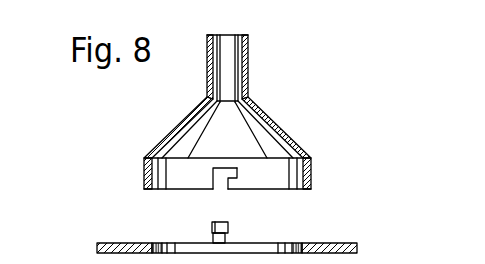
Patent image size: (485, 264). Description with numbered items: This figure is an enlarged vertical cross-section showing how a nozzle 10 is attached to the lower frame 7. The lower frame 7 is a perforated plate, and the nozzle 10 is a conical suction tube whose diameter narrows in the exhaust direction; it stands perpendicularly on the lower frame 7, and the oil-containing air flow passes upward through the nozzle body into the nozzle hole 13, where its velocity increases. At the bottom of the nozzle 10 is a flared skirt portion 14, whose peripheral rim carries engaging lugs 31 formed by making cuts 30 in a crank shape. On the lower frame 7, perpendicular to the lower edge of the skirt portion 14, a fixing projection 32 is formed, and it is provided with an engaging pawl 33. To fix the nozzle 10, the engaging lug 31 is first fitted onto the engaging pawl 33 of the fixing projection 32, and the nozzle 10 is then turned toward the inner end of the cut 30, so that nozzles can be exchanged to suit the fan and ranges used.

The lower frame 7 is at (342, 243).
The nozzle 10 is at (227, 109).
The nozzle hole 13 is at (232, 38).
The skirt portion 14 is at (278, 123).
The cut 30 is at (222, 175).
The engaging lug 31 is at (236, 183).
The fixing projection 32 is at (228, 238).
The engaging pawl 33 is at (228, 226).